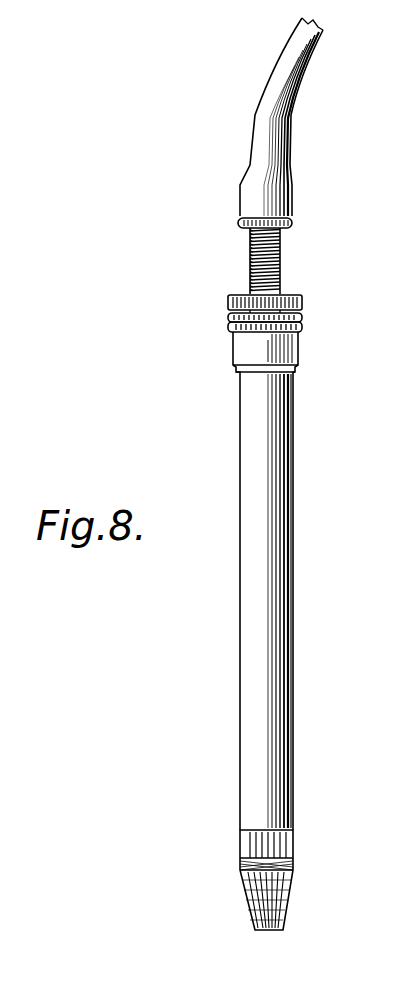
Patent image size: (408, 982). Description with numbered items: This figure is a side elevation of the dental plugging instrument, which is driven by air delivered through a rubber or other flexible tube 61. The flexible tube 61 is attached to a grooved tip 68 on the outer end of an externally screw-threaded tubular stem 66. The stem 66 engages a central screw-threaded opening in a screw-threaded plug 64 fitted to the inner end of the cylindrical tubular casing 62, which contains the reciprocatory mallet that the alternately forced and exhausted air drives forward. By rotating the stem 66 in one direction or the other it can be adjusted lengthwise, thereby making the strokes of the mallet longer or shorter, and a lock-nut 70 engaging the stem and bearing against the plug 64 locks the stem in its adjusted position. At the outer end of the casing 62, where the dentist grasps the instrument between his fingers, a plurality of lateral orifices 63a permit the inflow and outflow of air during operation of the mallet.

The flexible tube 61 is at (282, 121).
The tip 68 is at (293, 220).
The tubular stem 66 is at (281, 260).
The lock-nut 70 is at (303, 300).
The screw-threaded plug 64 is at (303, 325).
The tubular casing 62 is at (240, 463).
The lateral orifices 63a is at (293, 841).